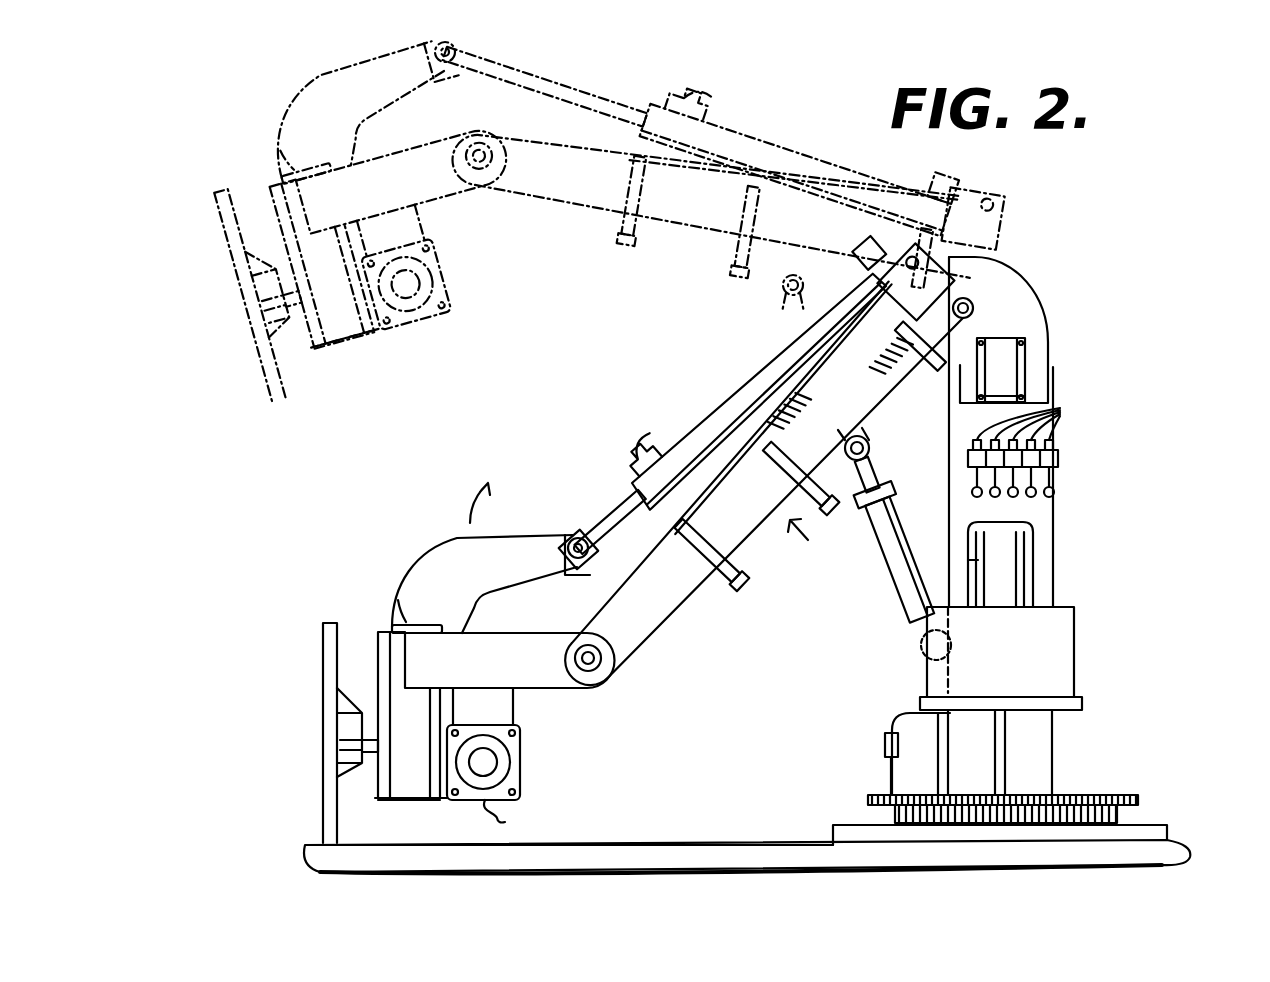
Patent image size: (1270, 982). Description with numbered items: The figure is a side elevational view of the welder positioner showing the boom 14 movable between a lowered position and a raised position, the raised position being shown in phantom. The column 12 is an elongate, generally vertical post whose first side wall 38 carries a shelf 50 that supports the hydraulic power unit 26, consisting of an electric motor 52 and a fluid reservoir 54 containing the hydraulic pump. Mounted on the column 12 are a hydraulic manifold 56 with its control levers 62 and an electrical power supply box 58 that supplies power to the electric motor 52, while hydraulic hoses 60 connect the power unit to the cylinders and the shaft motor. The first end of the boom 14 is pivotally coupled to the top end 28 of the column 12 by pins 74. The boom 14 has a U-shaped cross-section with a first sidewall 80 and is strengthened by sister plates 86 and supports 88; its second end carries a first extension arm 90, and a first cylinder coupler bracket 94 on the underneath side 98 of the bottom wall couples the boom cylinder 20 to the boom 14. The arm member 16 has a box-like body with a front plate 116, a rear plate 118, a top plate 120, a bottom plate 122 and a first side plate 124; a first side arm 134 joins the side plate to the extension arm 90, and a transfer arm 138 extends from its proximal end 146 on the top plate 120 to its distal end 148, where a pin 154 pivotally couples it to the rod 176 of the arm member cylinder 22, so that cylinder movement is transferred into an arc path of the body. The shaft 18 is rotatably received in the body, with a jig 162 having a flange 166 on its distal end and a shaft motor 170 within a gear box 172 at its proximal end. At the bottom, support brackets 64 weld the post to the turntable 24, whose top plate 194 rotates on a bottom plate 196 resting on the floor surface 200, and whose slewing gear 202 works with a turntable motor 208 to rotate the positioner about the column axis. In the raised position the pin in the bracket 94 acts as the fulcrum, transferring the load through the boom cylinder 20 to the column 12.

The column 12 is at (1053, 520).
The boom 14 is at (737, 537).
The arm member 16 is at (392, 648).
The shaft 18 is at (368, 752).
The boom cylinder 20 is at (888, 545).
The arm member cylinder 22 is at (750, 385).
The turntable 24 is at (1120, 812).
The hydraulic power unit 26 is at (968, 560).
The top end 28 is at (995, 268).
The first side wall 38 is at (1052, 760).
The shelf 50 is at (1082, 703).
The electric motor 52 is at (1030, 552).
The fluid reservoir 54 is at (1074, 625).
The hydraulic manifold 56 is at (1058, 460).
The electrical power supply box 58 is at (1008, 355).
The hydraulic hose 60 is at (1055, 410).
The control levers 62 is at (1055, 492).
The support brackets 64 is at (1003, 745).
The pins 74 is at (973, 308).
The first sidewall 80 is at (815, 470).
The sister plates 86 is at (828, 385).
The supports 88 is at (727, 590).
The first extension arm 90 is at (652, 625).
The first cylinder coupler bracket 94 is at (870, 445).
The underneath side 98 is at (813, 534).
The front plate 116 is at (378, 798).
The rear plate 118 is at (440, 798).
The top plate 120 is at (432, 625).
The bottom plate 122 is at (395, 802).
The first side plate 124 is at (393, 752).
The first side arm 134 is at (505, 633).
The transfer arm 138 is at (460, 540).
The proximal end 146 is at (398, 600).
The distal end 148 is at (577, 568).
The pin 154 is at (577, 538).
The jig 162 is at (323, 648).
The flange 166 is at (337, 724).
The shaft motor 170 is at (497, 762).
The gear box 172 is at (513, 706).
The rod 176 is at (614, 506).
The top plate 194 is at (880, 795).
The bottom plate 196 is at (833, 835).
The floor surface 200 is at (1190, 852).
The slewing gear 202 is at (895, 815).
The turntable motor 208 is at (892, 726).